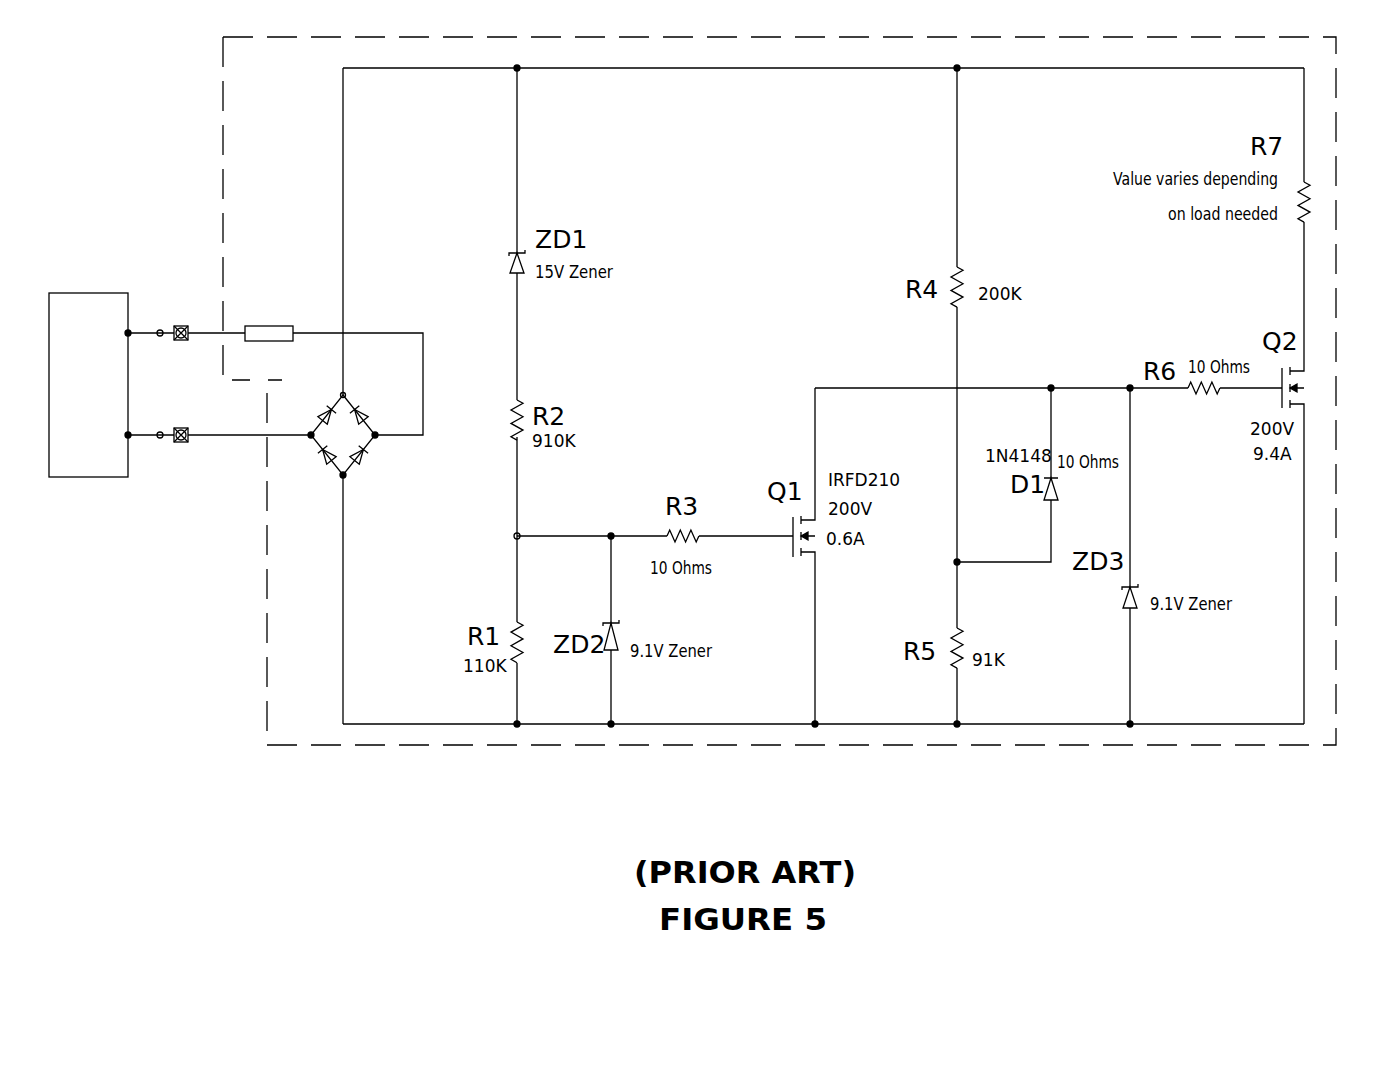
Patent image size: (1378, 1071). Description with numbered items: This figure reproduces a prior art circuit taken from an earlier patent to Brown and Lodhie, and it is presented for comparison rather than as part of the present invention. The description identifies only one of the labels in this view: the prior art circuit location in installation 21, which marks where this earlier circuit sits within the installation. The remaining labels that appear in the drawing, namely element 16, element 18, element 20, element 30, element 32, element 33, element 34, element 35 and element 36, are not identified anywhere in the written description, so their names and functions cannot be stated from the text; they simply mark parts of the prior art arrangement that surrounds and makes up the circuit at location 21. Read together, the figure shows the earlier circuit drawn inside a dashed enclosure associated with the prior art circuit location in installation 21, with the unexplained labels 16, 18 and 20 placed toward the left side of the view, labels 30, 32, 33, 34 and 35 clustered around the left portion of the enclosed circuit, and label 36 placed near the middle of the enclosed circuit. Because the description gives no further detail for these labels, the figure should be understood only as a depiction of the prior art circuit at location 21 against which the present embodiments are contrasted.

The power connector 16 is at (162, 448).
The power source 18 is at (95, 293).
The input terminals 20 is at (160, 329).
The prior art circuit location in installation 21 is at (275, 325).
The bridge rectifier 30 is at (377, 437).
The protection circuit 32 is at (354, 348).
The rectifier positive output node 33 is at (345, 392).
The AC input line 34 is at (311, 437).
The rectifier negative output node 35 is at (343, 478).
The control node 36 is at (521, 532).